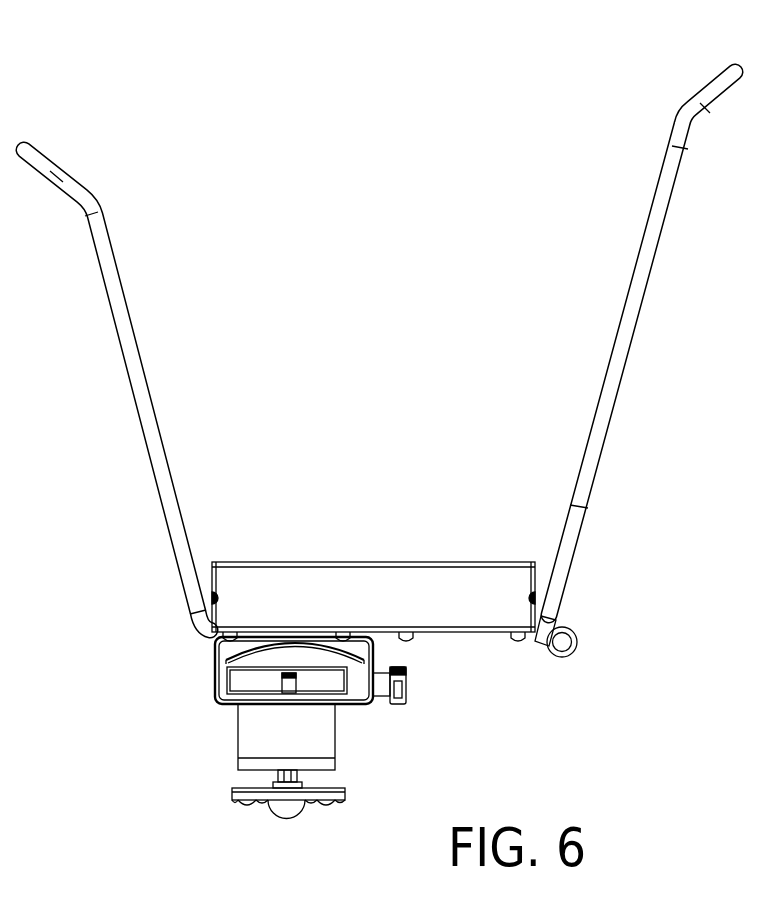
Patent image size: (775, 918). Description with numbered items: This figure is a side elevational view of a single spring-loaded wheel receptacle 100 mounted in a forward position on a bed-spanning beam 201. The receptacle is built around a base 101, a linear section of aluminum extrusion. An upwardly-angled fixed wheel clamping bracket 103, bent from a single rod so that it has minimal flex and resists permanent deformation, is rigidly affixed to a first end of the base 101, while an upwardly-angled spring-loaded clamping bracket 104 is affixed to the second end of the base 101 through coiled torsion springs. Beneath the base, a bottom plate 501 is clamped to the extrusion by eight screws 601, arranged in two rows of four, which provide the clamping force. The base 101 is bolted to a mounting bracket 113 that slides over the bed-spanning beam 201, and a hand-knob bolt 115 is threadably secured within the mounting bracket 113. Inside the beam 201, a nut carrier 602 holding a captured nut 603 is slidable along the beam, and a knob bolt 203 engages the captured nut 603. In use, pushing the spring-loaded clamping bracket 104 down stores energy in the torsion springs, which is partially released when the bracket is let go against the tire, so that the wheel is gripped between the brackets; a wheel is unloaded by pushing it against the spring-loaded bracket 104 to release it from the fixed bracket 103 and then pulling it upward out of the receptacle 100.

The single wheel receptacle 100 is at (506, 88).
The base 101 is at (335, 582).
The fixed wheel clamping bracket 103 is at (117, 324).
The spring-loaded clamping bracket 104 is at (632, 324).
The mounting bracket 113 is at (222, 650).
The hand-knob bolt 115 is at (402, 702).
The bed-spanning beam 201 is at (256, 735).
The knob bolt 203 is at (262, 799).
The bottom plate 501 is at (435, 632).
The screws 601 is at (237, 632).
The nut carrier 602 is at (218, 700).
The captured nut 603 is at (293, 695).